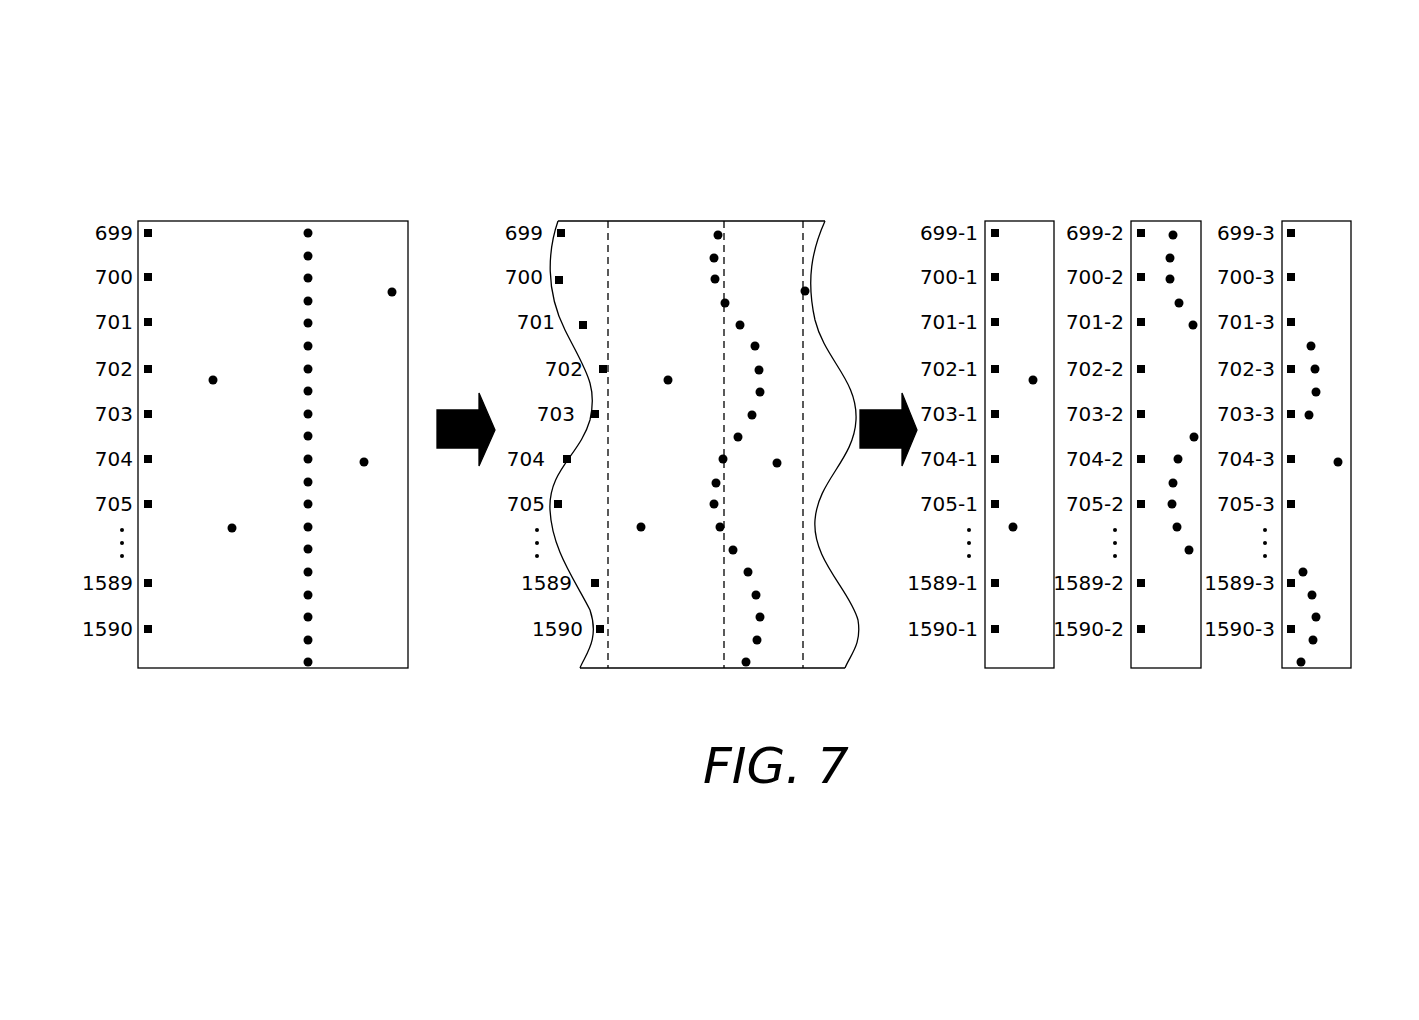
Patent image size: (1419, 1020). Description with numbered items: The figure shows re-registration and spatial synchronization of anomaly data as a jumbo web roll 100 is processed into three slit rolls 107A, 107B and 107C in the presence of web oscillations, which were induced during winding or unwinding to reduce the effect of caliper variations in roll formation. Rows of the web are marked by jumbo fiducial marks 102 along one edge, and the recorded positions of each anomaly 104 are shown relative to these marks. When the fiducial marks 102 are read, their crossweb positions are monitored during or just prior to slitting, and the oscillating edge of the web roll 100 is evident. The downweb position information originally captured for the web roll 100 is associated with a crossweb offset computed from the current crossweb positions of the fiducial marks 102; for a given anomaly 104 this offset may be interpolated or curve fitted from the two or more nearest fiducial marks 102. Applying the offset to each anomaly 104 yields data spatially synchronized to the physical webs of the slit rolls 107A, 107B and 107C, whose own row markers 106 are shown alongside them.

The jumbo web roll 100 is at (355, 221).
The jumbo fiducial marks 102 is at (148, 634).
The anomaly 104 is at (232, 528).
The row identifier markers in sub-arrays 106 is at (995, 634).
The slit roll 107A is at (1032, 221).
The slit roll 107B is at (1167, 221).
The slit roll 107C is at (1325, 221).